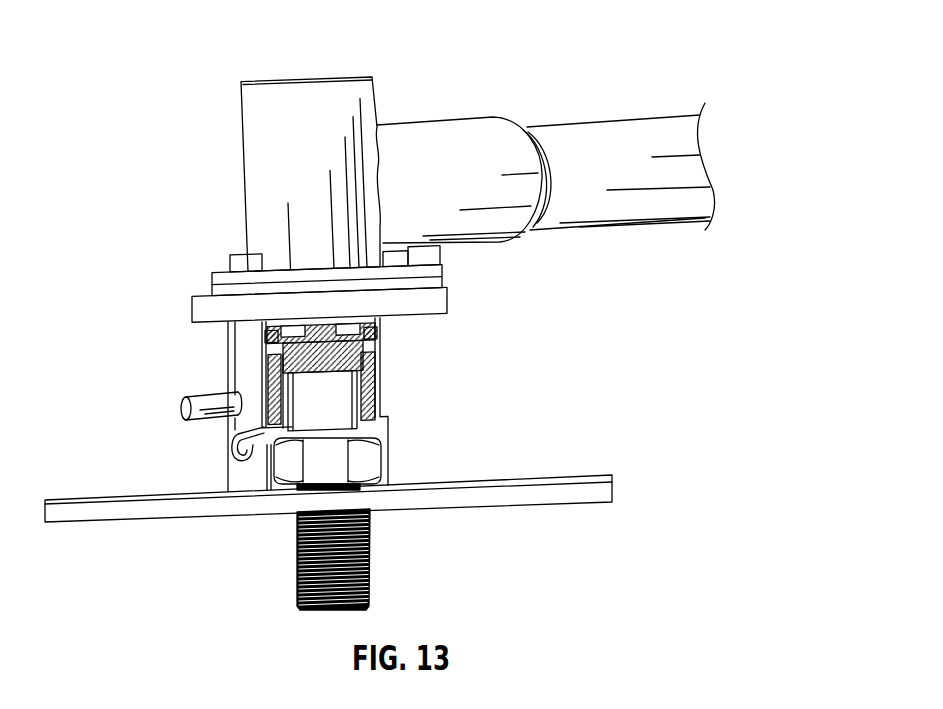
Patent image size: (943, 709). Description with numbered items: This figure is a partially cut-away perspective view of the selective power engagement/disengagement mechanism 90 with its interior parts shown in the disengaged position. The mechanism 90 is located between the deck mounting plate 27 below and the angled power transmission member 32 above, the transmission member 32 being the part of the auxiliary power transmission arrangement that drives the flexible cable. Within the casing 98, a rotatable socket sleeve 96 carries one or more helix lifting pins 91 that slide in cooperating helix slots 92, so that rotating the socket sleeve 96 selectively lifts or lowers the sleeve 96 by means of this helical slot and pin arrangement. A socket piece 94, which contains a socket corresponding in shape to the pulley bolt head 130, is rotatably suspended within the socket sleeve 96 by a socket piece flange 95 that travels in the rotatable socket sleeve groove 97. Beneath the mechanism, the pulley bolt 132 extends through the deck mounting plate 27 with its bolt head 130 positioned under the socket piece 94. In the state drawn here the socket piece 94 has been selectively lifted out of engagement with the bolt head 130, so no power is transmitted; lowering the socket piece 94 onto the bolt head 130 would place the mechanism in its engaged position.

The deck mounting plate 27 is at (100, 513).
The angled power transmission member 32 is at (303, 97).
The selective power engagement/disengagement mechanism 90 is at (215, 341).
The helix lifting pin 91 is at (182, 407).
The helix slot 92 is at (247, 457).
The socket piece 94 is at (317, 350).
The socket piece flange 95 is at (263, 340).
The rotatable socket sleeve 96 is at (377, 393).
The rotatable socket sleeve groove 97 is at (377, 327).
The casing 98 is at (385, 434).
The pulley bolt head 130 is at (337, 465).
The pulley bolt 132 is at (370, 549).